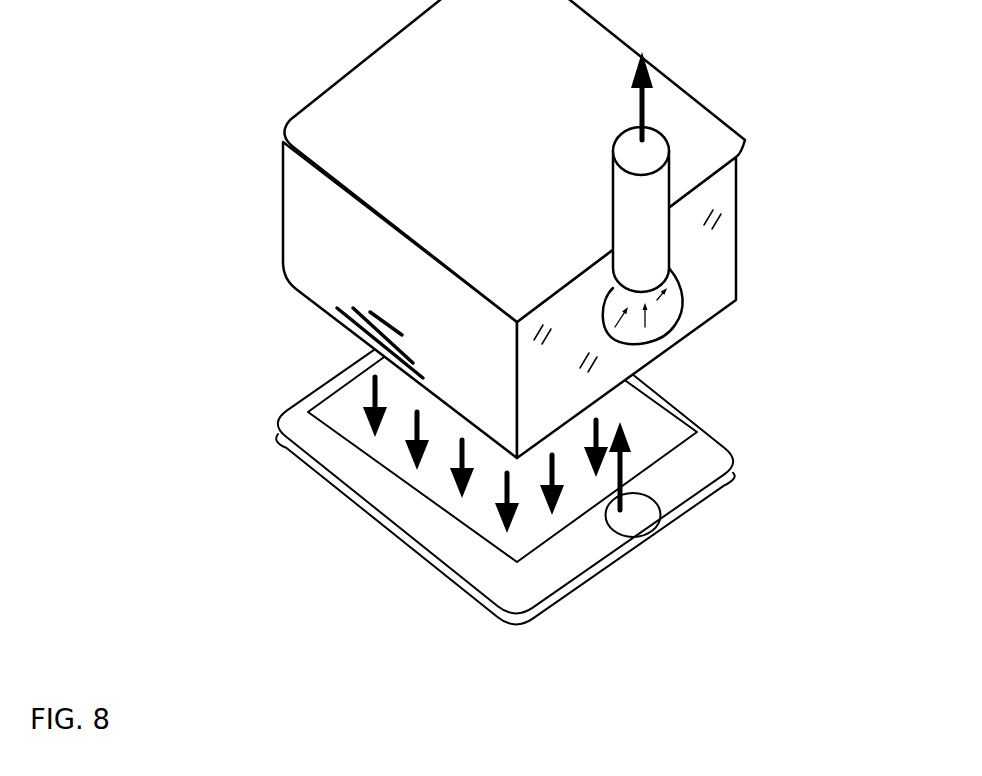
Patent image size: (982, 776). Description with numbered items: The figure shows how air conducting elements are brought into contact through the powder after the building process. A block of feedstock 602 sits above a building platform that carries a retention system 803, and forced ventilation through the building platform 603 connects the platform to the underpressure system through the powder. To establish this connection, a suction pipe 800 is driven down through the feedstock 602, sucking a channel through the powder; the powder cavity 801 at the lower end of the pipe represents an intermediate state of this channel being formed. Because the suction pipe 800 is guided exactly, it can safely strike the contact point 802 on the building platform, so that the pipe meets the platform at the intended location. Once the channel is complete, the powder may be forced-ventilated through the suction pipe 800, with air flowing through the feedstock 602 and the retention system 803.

The feedstock 602 is at (301, 238).
The forced ventilation through the building platform 603 is at (281, 435).
The suction pipe 800 is at (662, 197).
The powder cavity 801 is at (666, 321).
The contact point with the building platform 802 is at (631, 534).
The retention system on the building platform 803 is at (471, 521).